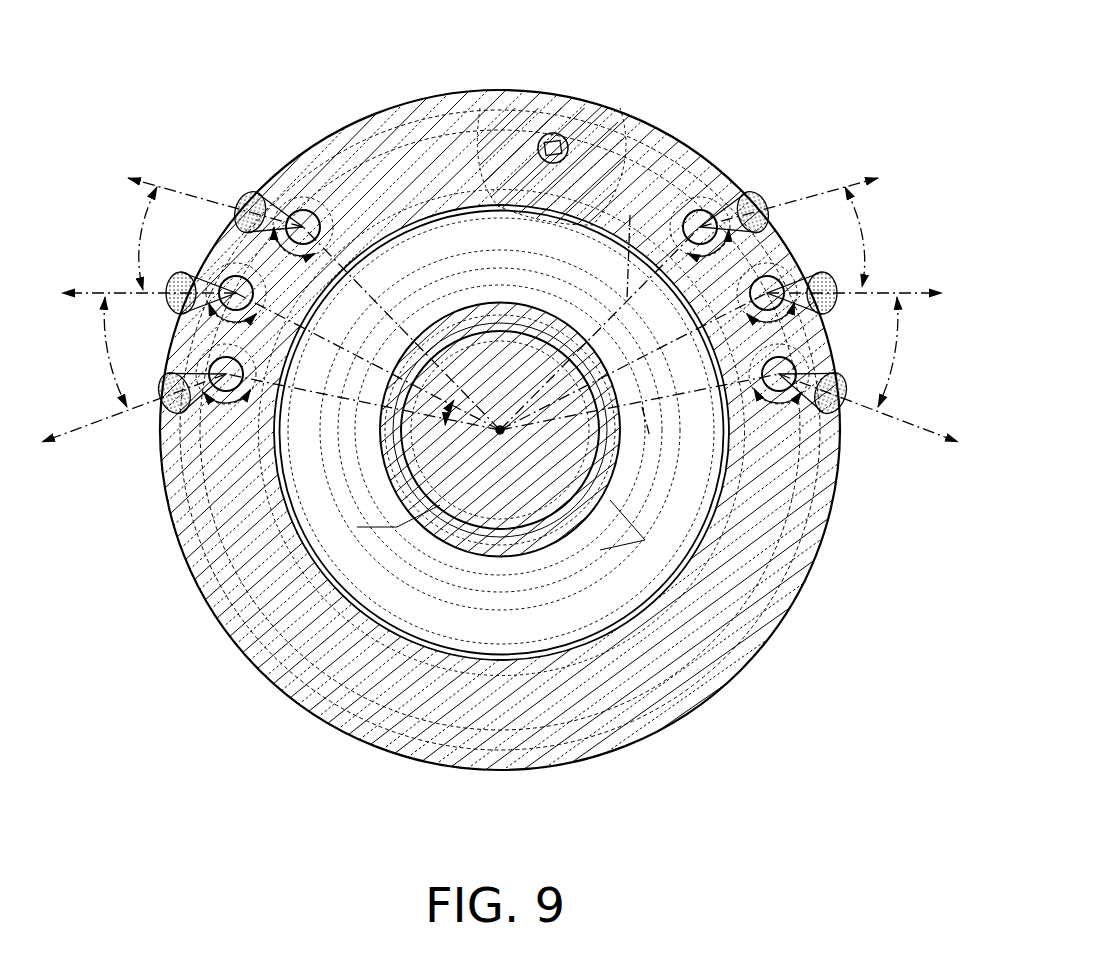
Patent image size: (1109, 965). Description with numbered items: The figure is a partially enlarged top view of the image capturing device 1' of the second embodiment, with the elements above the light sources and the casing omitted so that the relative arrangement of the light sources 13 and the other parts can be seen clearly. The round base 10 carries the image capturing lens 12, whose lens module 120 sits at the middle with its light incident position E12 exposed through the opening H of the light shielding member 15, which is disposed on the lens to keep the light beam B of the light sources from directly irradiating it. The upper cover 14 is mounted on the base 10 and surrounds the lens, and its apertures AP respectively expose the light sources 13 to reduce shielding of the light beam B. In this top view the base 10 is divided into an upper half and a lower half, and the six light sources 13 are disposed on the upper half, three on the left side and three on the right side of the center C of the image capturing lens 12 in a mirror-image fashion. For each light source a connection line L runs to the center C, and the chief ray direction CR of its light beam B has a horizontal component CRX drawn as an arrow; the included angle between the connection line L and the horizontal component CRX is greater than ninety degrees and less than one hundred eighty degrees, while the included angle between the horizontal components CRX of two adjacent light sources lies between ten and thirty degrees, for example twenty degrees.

The image capturing device 1' is at (500, 458).
The base 10 is at (763, 582).
The image capturing lens 12 is at (569, 118).
The lens module 120 is at (527, 357).
The light incident position E12 is at (553, 148).
The light source 13 is at (704, 220).
The upper cover 14 is at (732, 622).
The light shielding member 15 is at (583, 582).
The light beam B is at (252, 194).
The opening H is at (450, 310).
The connection line L is at (628, 240).
The aperture AP is at (683, 207).
The center C is at (501, 410).
The chief ray direction CR is at (502, 319).
The horizontal component CRX is at (502, 350).